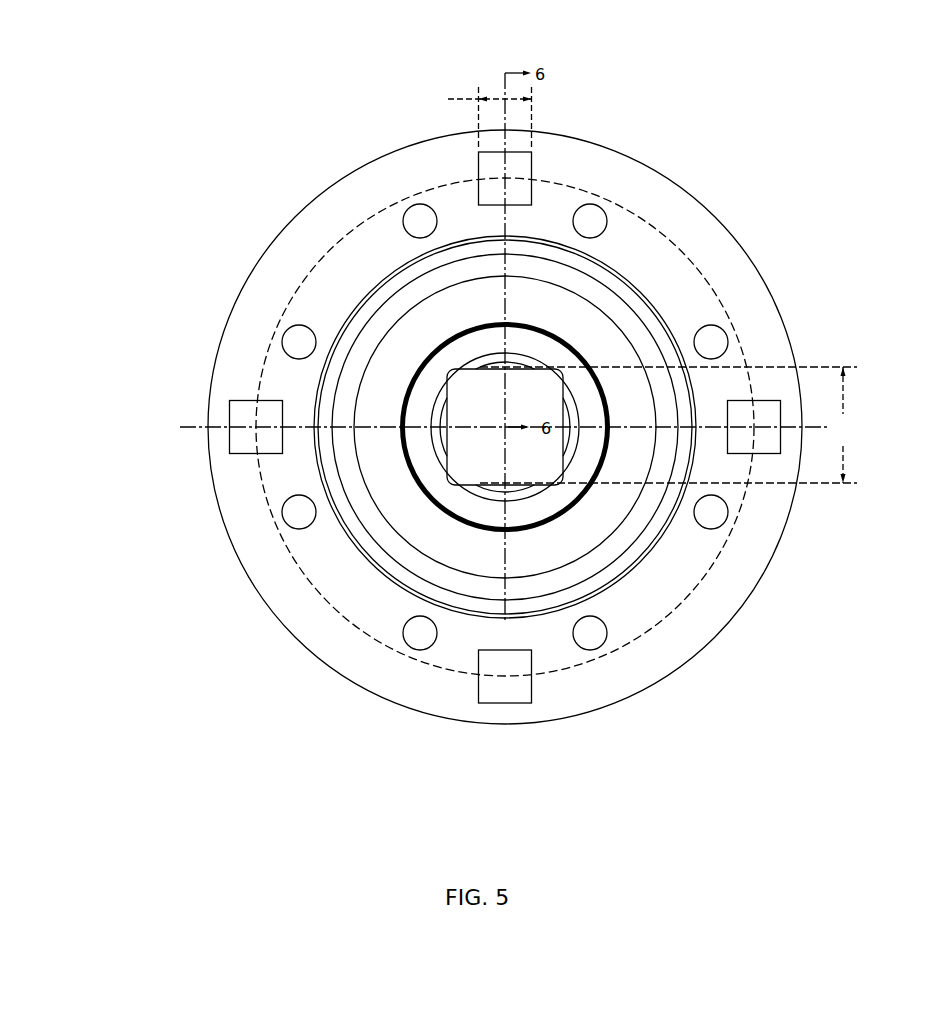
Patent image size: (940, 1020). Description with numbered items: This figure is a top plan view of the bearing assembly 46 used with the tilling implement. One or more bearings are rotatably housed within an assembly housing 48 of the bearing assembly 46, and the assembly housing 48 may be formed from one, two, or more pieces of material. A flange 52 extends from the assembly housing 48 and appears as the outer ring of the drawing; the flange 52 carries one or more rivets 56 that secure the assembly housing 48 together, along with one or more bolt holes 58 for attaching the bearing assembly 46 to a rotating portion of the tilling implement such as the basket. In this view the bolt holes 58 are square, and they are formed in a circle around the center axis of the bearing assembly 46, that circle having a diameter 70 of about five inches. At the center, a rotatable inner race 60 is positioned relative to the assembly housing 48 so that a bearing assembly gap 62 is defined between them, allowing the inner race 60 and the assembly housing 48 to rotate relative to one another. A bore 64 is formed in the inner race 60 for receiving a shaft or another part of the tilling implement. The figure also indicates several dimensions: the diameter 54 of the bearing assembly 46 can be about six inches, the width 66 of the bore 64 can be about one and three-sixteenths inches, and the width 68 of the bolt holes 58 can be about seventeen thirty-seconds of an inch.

The bearing assembly 46 is at (712, 146).
The assembly housing 48 is at (815, 334).
The flange 52 is at (700, 279).
The diameter 54 is at (495, 427).
The rivets 56 is at (724, 328).
The bolt holes 58 is at (531, 152).
The inner race 60 is at (592, 452).
The bearing assembly gap 62 is at (400, 443).
The bore 64 is at (456, 488).
The width 66 is at (668, 425).
The width 68 is at (477, 117).
The diameter 70 is at (505, 395).